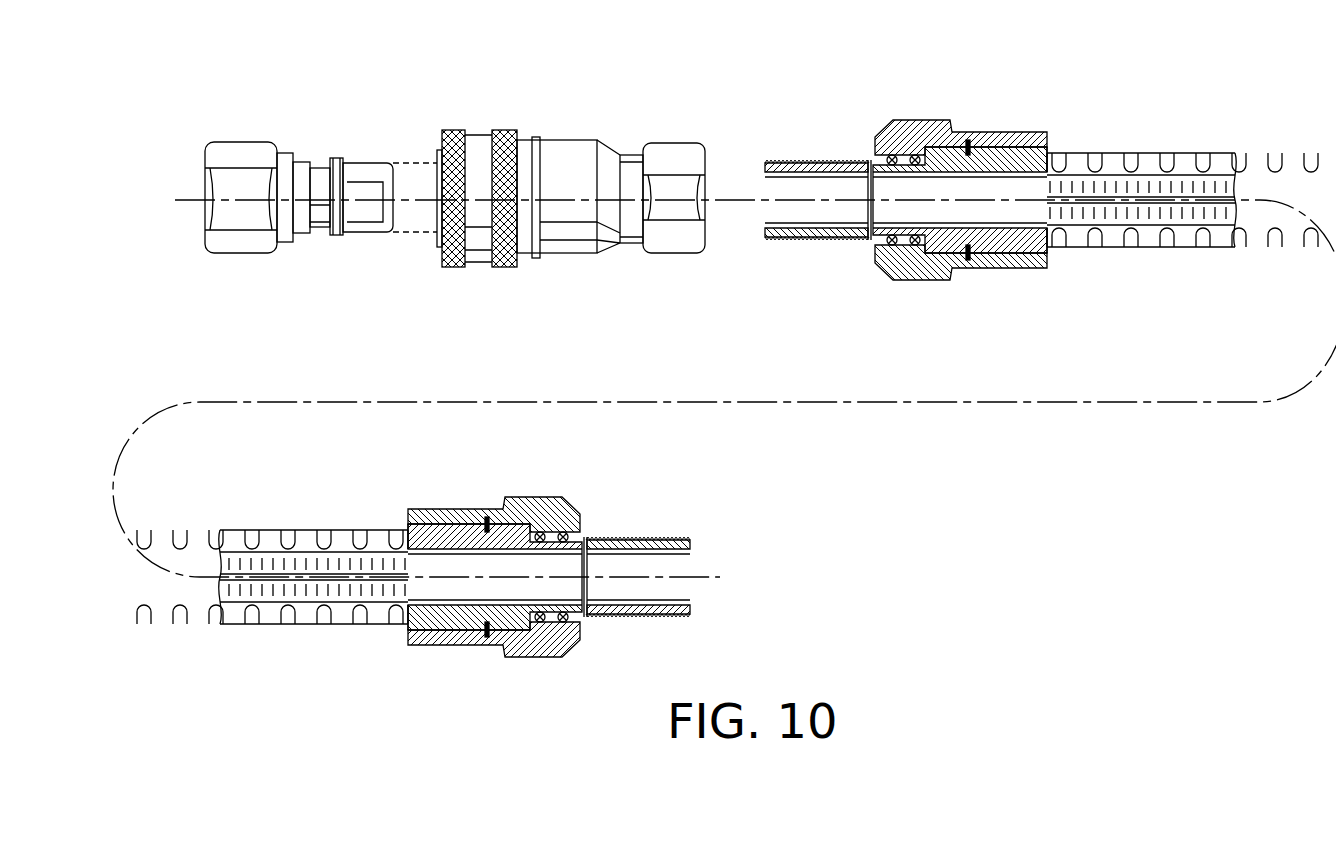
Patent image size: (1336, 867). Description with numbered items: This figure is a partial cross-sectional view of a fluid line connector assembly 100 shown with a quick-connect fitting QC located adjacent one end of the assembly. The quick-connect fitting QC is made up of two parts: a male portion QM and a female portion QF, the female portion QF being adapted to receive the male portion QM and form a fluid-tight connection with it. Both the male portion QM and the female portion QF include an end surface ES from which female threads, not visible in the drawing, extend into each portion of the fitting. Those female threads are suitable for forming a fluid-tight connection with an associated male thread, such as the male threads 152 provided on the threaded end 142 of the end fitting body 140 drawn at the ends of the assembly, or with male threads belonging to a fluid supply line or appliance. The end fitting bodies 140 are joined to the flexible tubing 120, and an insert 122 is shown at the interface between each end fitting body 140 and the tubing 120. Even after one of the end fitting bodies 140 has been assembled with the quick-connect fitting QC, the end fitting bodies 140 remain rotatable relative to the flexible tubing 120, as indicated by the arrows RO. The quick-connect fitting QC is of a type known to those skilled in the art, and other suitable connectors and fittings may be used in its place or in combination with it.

The fluid line connector assembly 100 is at (727, 384).
The flexible tubing 120 is at (1186, 151).
The insert sleeve 122 is at (938, 190).
The end fitting body 140 is at (918, 118).
The threaded end 142 is at (787, 140).
The male threads 152 is at (835, 155).
The male portion QM is at (262, 137).
The quick-connect fitting QC is at (430, 132).
The female portion QF is at (583, 138).
The end surface ES is at (203, 162).
The arrows RO is at (1040, 117).